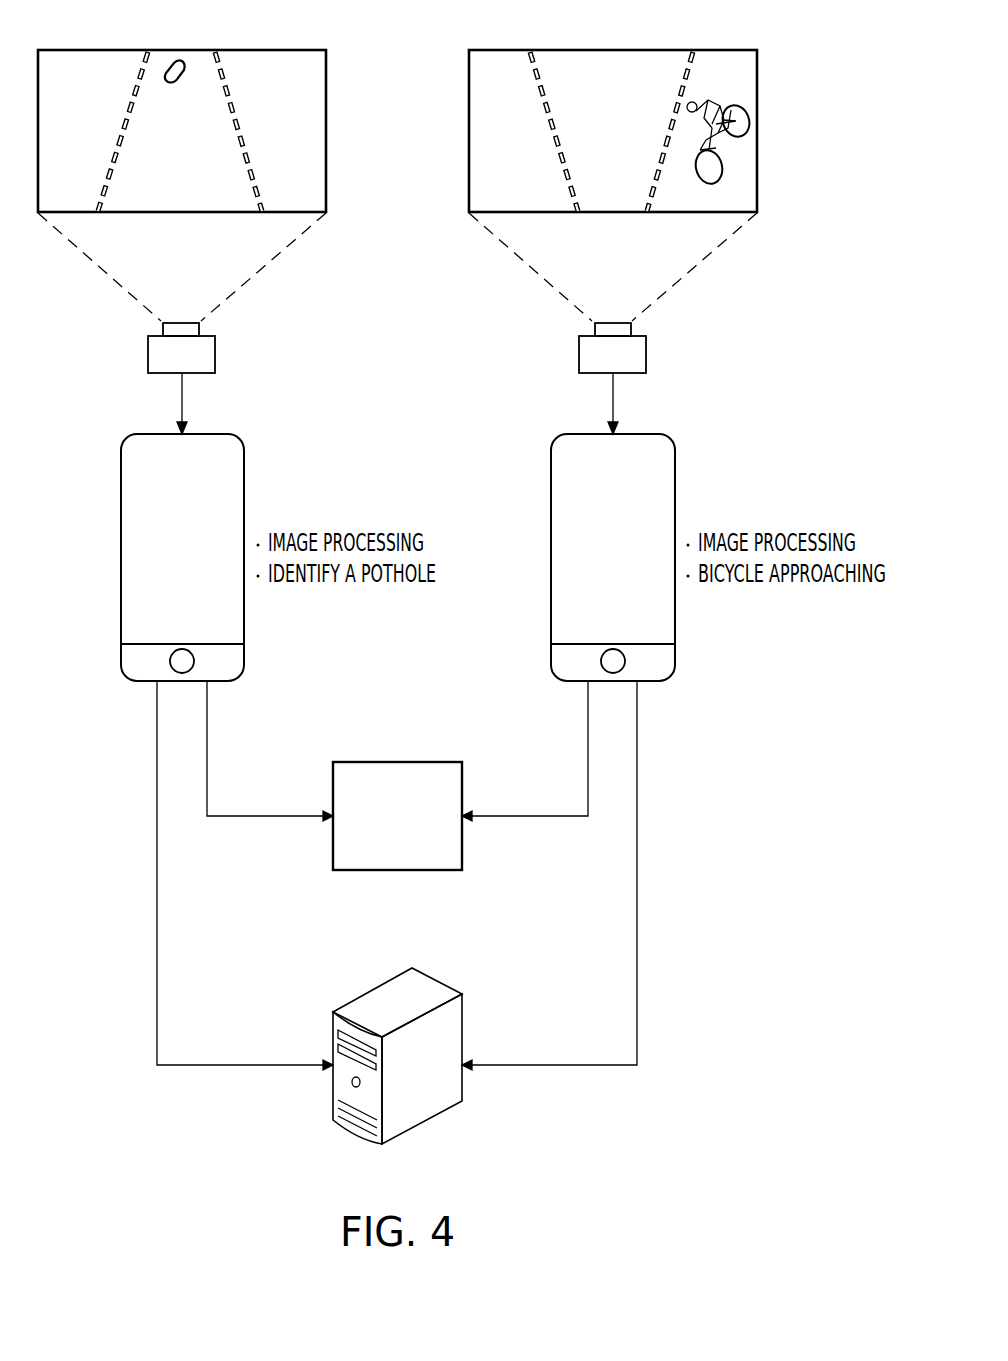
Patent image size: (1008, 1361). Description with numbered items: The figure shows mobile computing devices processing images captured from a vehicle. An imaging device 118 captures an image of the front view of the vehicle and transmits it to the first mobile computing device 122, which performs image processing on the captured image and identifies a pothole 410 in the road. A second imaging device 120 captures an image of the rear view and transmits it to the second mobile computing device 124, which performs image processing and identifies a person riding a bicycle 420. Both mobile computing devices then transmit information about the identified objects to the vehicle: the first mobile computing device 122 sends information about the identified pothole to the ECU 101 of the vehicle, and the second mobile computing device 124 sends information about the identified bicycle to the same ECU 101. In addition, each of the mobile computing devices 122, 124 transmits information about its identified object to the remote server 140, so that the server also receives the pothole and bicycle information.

The ECU 101 is at (397, 762).
The imaging device 118 is at (148, 356).
The imaging device 120 is at (646, 356).
The first mobile computing device 122 is at (121, 482).
The second mobile computing device 124 is at (676, 482).
The remote server 140 is at (372, 992).
The pothole 410 is at (183, 60).
The bicycle 420 is at (708, 95).